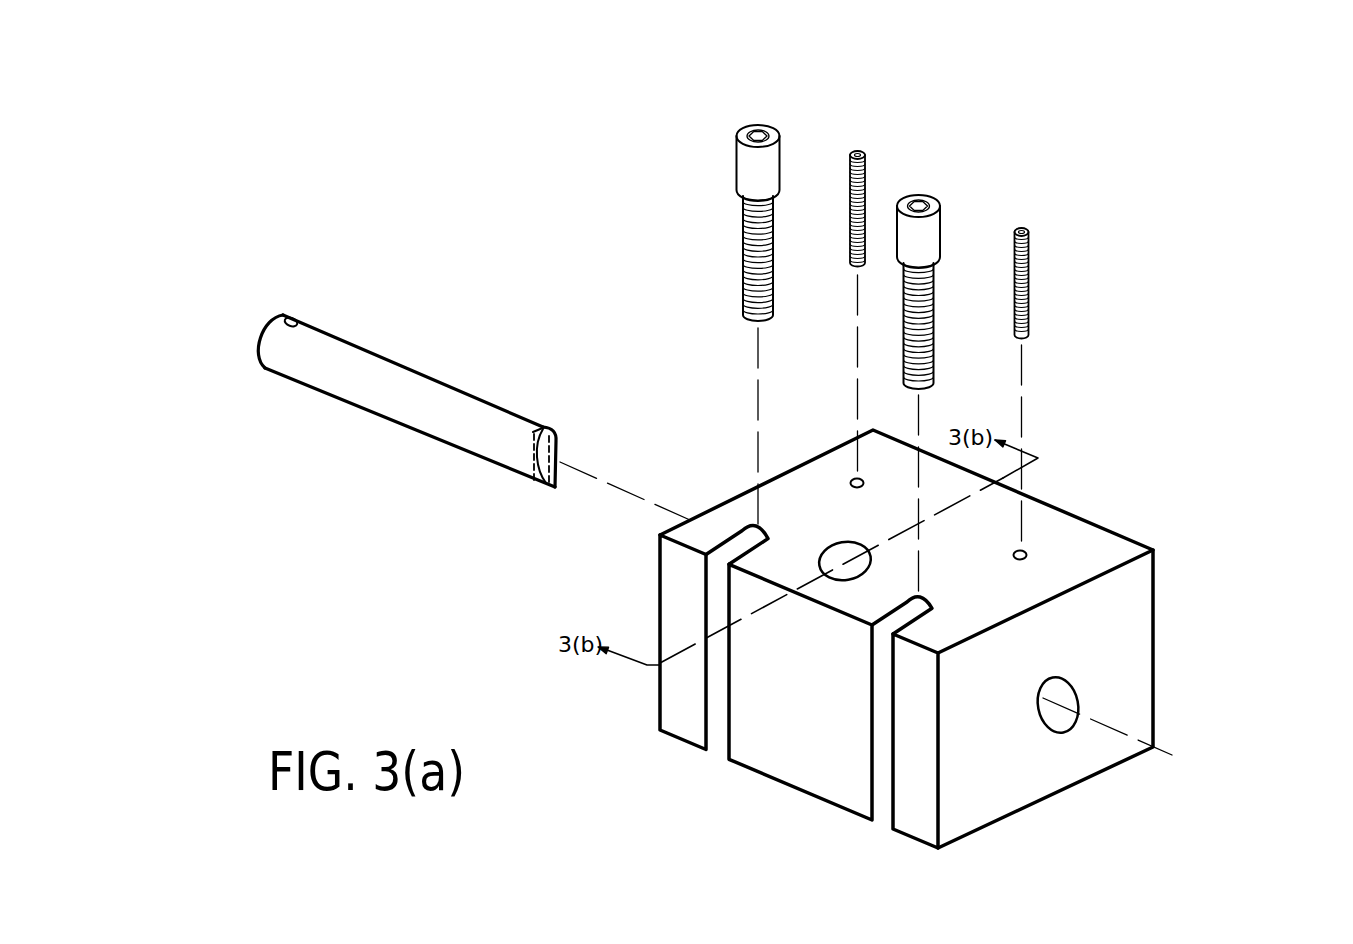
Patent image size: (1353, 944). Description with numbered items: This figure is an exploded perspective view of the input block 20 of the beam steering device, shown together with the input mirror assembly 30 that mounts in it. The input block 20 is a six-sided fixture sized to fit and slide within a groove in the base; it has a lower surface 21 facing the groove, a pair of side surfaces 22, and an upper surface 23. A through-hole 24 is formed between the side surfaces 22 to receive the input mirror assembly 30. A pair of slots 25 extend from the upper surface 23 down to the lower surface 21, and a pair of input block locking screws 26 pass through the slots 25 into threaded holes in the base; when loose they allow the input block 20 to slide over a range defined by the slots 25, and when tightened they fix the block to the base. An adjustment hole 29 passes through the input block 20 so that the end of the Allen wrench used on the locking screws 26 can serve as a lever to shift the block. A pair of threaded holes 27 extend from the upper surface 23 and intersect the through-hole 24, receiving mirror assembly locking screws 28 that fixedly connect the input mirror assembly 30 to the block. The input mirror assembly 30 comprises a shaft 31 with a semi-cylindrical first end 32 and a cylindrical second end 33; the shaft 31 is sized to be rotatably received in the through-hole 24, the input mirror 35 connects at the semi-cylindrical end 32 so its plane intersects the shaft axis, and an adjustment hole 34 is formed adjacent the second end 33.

The input block 20 is at (1224, 650).
The lower surface 21 is at (1060, 793).
The side surfaces 22 is at (660, 678).
The upper surface 23 is at (1103, 553).
The through-hole 24 is at (1068, 697).
The slots 25 is at (880, 715).
The input block locking screws 26 is at (760, 124).
The threaded holes 27 is at (857, 478).
The mirror assembly locking screws 28 is at (862, 153).
The adjustment hole 29 is at (848, 541).
The input mirror assembly 30 is at (378, 476).
The shaft 31 is at (422, 363).
The semi-cylindrical first end 32 is at (545, 426).
The cylindrical second end 33 is at (267, 326).
The adjustment hole 34 is at (293, 314).
The input mirror 35 is at (563, 458).